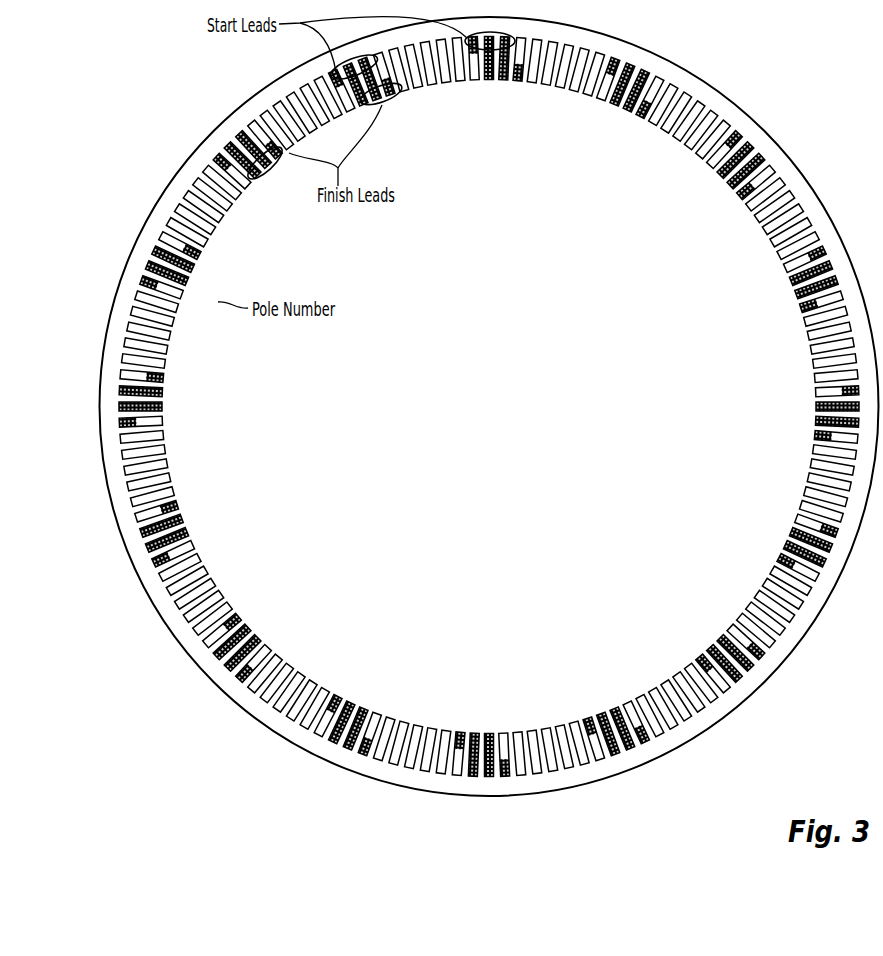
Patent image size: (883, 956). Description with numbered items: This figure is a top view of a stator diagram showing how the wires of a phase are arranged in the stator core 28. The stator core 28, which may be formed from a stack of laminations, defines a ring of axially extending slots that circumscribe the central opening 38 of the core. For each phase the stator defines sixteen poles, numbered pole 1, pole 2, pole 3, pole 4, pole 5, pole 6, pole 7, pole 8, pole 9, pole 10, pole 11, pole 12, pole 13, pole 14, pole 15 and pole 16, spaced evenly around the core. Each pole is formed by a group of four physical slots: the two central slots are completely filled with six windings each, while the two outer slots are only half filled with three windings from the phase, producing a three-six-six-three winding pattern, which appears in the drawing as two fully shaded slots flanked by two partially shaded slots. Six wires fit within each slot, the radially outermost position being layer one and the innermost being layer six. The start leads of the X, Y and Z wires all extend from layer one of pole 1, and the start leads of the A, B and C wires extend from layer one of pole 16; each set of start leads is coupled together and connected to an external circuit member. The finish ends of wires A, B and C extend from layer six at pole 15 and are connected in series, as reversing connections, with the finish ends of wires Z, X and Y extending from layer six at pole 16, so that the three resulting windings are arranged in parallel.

The pole 1 is at (536, 76).
The pole 2 is at (663, 110).
The pole 3 is at (763, 199).
The pole 4 is at (816, 320).
The pole 5 is at (819, 454).
The pole 6 is at (785, 580).
The pole 7 is at (696, 677).
The pole 8 is at (575, 730).
The pole 9 is at (441, 736).
The pole 10 is at (315, 702).
The pole 11 is at (217, 613).
The pole 12 is at (163, 493).
The pole 13 is at (157, 359).
The pole 14 is at (192, 241).
The pole 15 is at (282, 136).
The pole 16 is at (402, 82).
The stator core 28 is at (107, 337).
The central opening 38 is at (357, 455).